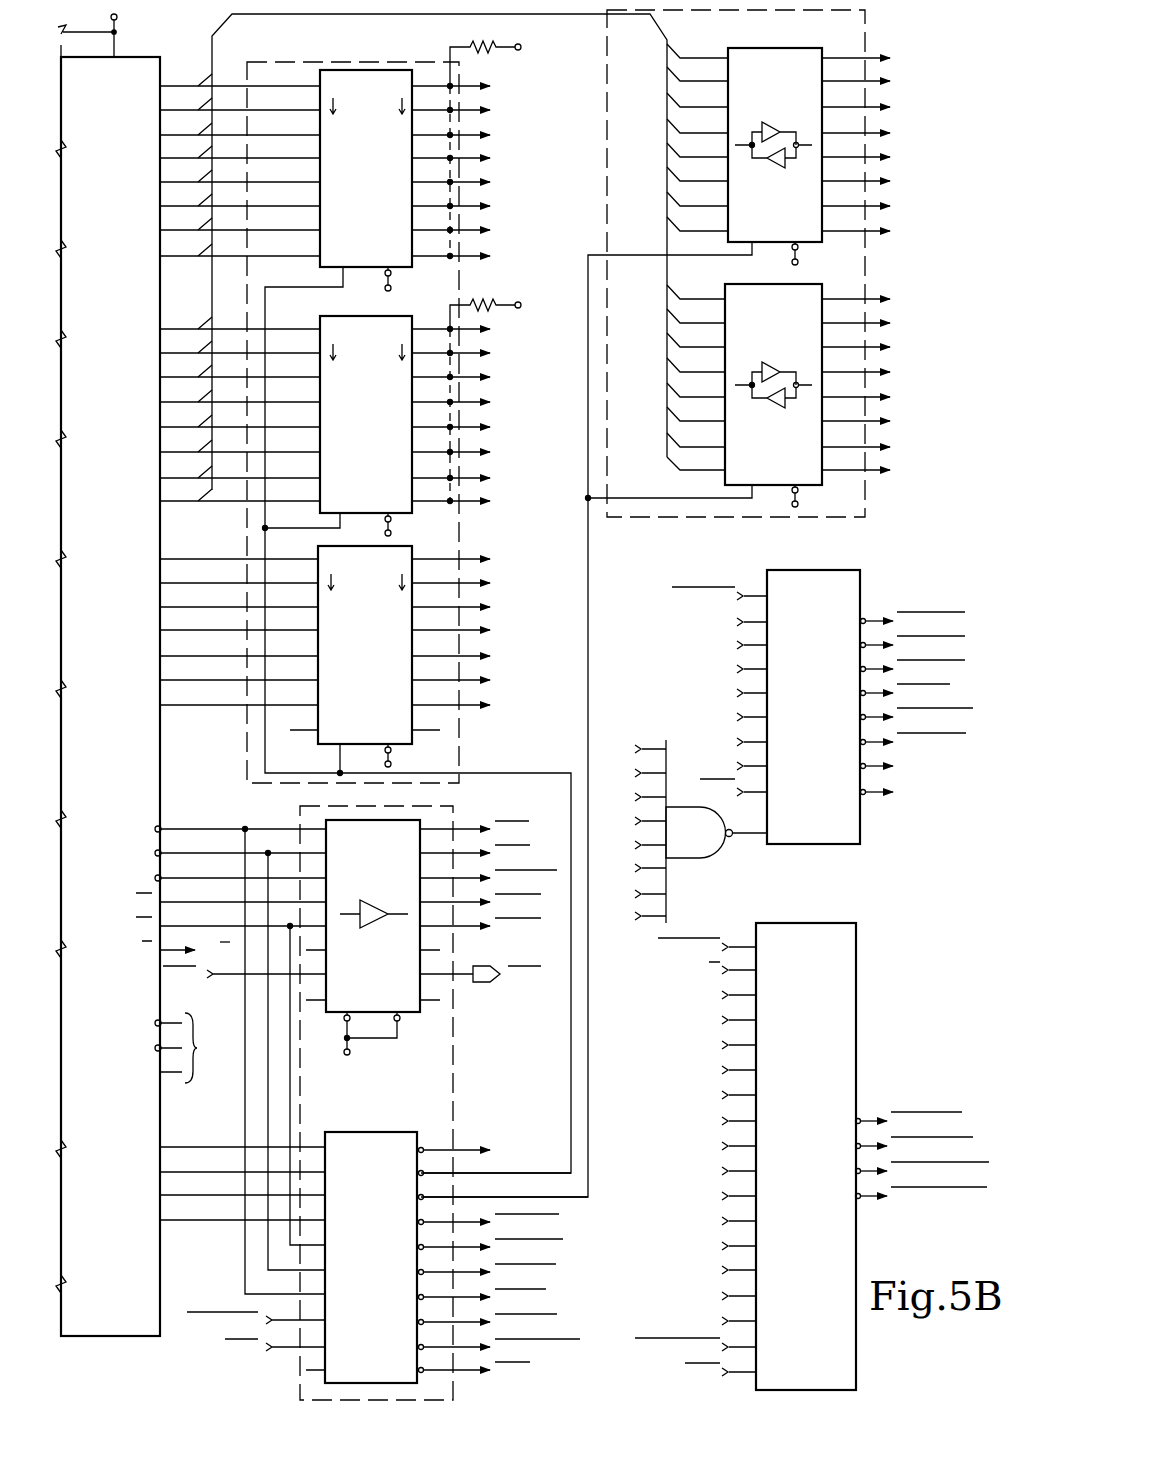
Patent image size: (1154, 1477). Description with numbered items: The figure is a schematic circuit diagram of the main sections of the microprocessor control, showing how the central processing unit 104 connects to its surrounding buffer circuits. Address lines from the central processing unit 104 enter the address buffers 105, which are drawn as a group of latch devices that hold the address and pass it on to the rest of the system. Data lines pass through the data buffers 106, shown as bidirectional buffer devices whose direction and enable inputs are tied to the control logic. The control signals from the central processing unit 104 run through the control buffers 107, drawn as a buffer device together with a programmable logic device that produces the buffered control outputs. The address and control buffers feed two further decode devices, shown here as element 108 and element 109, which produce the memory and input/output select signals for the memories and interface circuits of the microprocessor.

The central processing unit 104 is at (102, 294).
The address buffers 105 is at (300, 62).
The data buffers 106 is at (868, 35).
The control buffers 107 is at (455, 817).
The memory decode PAL 18L4 108 is at (858, 974).
The I/O decode PAL 10L8 109 is at (863, 578).